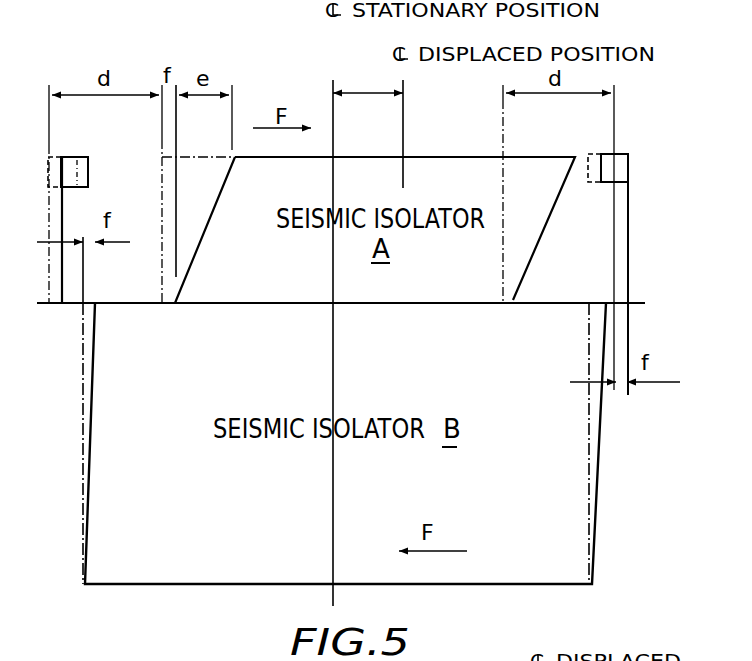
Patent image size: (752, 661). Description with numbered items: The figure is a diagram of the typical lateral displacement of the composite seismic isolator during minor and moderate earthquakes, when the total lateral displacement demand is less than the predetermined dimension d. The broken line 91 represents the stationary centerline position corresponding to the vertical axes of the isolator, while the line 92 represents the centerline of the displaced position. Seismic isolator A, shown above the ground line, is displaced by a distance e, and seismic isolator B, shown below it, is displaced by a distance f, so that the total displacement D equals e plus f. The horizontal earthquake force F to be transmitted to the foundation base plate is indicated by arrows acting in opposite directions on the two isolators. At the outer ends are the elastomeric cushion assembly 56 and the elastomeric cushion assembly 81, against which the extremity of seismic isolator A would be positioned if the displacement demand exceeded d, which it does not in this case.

The broken line 91 is at (331, 108).
The line 92 is at (405, 108).
The elastomeric cushion assembly 56 is at (626, 160).
The elastomeric cushion assembly 81 is at (622, 172).